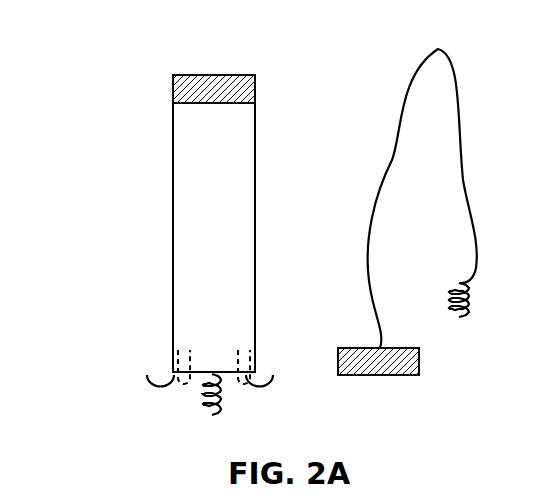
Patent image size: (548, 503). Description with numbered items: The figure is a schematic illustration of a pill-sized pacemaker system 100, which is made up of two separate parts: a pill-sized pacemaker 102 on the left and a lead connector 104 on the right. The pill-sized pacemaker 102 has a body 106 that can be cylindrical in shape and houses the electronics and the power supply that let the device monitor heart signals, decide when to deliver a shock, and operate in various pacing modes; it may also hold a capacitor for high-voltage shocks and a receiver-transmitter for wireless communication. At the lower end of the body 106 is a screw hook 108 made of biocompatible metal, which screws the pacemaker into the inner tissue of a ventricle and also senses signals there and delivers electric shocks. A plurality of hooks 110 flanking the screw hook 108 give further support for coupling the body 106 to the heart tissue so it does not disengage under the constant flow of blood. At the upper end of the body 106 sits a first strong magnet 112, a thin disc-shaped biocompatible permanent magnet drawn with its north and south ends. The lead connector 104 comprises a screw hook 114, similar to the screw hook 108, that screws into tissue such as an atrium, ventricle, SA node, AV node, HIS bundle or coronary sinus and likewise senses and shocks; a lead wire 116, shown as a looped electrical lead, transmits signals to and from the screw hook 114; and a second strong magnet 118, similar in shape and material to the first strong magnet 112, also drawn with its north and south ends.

The pill-sized pacemaker system 100 is at (141, 34).
The pill-sized pacemaker 102 is at (164, 222).
The lead connector 104 is at (386, 120).
The body 106 is at (214, 283).
The screw hook 108 is at (204, 400).
The plurality of hooks 110 is at (162, 369).
The first strong magnet 112 is at (216, 77).
The screw hook 114 is at (468, 306).
The lead wire 116 is at (392, 163).
The second strong magnet 118 is at (380, 376).